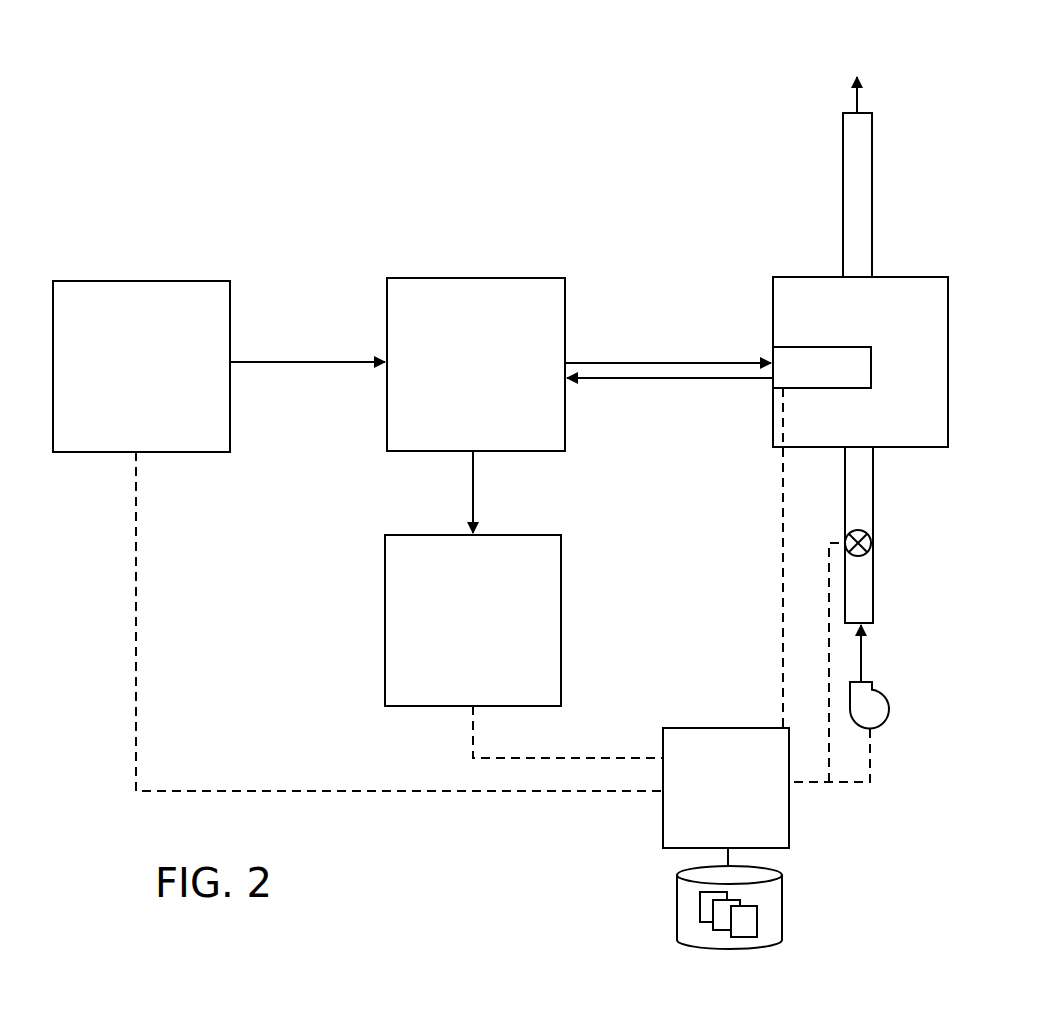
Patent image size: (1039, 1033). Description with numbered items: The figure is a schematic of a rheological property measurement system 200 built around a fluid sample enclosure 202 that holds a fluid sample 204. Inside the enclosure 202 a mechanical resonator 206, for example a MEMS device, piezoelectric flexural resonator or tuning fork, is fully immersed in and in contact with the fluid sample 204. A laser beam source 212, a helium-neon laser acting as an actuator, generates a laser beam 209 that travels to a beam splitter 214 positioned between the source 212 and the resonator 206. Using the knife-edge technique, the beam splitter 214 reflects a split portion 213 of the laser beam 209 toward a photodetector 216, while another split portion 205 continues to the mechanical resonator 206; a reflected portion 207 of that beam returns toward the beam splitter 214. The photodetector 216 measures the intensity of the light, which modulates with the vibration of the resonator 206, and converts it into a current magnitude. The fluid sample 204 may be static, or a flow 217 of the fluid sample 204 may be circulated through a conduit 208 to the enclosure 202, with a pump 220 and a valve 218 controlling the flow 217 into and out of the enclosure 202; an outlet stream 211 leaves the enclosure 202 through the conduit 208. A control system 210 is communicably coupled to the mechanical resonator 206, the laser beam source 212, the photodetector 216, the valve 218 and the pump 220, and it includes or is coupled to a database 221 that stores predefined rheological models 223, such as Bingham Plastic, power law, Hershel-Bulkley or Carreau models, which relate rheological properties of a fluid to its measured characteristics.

The rheological property measurement system 200 is at (280, 211).
The fluid sample enclosure 202 is at (948, 313).
The fluid sample 204 is at (930, 389).
The split portion of the laser beam 205 is at (642, 362).
The mechanical resonator 206 is at (822, 537).
The reflected portion 207 is at (700, 379).
The conduit 208 is at (872, 229).
The laser beam 209 is at (330, 372).
The control system 210 is at (726, 797).
The outlet flow 211 is at (860, 98).
The laser beam source 212 is at (358, 536).
The split portion of the laser beam 213 is at (474, 500).
The beam splitter 214 is at (476, 364).
The photodetector 216 is at (524, 646).
The flow 217 is at (861, 653).
The valve 218 is at (875, 543).
The pump 220 is at (890, 712).
The database 221 is at (782, 883).
The rheological models 223 is at (758, 920).